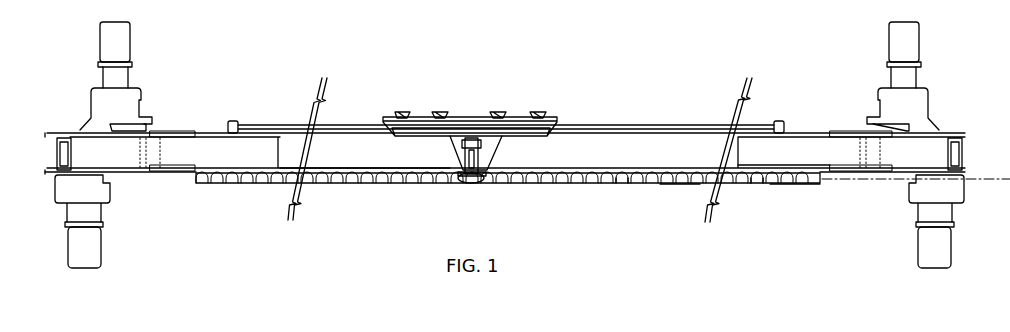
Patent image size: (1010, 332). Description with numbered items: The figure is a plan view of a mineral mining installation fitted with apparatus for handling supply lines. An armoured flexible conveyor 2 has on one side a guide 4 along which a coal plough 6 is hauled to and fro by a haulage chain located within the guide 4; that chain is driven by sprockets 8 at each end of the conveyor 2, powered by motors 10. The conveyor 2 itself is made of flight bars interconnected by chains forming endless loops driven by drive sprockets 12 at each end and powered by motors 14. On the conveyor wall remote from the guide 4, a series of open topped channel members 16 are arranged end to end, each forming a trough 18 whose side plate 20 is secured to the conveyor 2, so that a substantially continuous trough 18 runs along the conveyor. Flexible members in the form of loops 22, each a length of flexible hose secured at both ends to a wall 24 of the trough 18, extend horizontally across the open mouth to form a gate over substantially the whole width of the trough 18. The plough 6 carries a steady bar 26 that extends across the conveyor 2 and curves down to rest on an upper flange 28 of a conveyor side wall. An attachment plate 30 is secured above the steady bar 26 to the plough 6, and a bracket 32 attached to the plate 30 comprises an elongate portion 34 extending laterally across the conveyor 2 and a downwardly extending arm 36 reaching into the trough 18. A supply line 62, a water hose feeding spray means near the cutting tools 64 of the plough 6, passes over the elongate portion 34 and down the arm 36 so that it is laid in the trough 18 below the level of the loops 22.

The armoured flexible conveyor 2 is at (792, 133).
The guide 4 is at (748, 124).
The coal plough 6 is at (527, 114).
The sprockets 8 is at (146, 128).
The motors 10 is at (134, 42).
The drive sprockets 12 is at (60, 135).
The motors 14 is at (103, 252).
The channel member 16 is at (762, 185).
The trough 18 is at (783, 185).
The side plate 20 is at (800, 170).
The loops 22 is at (643, 174).
The wall 24 is at (628, 183).
The steady bar 26 is at (488, 147).
The upper flange 28 is at (355, 169).
The attachment plate 30 is at (481, 151).
The bracket 32 is at (462, 162).
The elongate portion 34 is at (481, 186).
The arm 36 is at (462, 187).
The supply line 62 is at (673, 190).
The cutting tools 64 is at (498, 114).